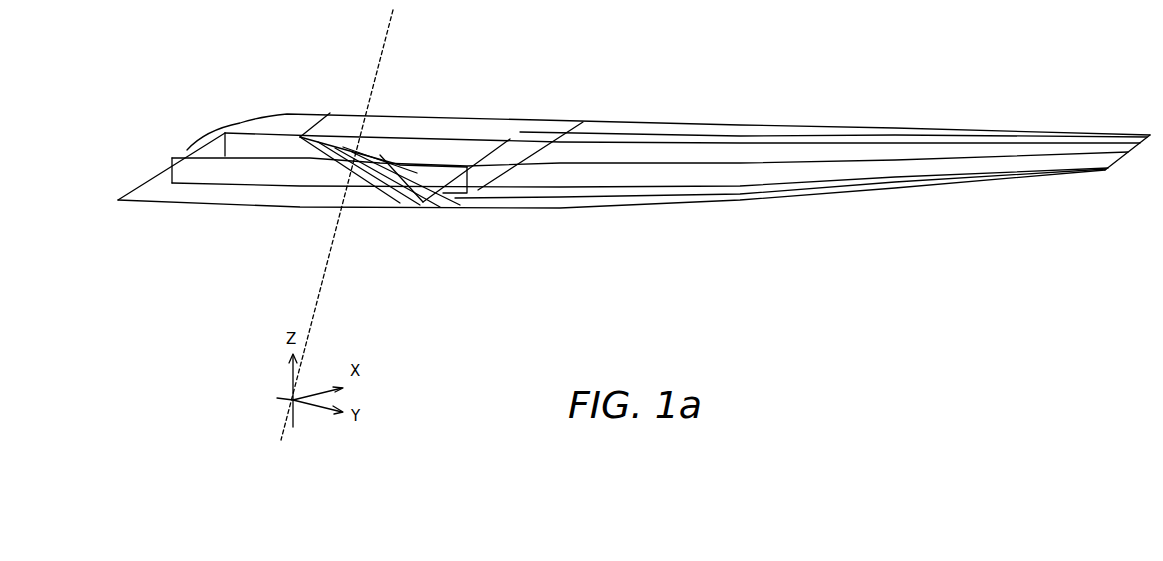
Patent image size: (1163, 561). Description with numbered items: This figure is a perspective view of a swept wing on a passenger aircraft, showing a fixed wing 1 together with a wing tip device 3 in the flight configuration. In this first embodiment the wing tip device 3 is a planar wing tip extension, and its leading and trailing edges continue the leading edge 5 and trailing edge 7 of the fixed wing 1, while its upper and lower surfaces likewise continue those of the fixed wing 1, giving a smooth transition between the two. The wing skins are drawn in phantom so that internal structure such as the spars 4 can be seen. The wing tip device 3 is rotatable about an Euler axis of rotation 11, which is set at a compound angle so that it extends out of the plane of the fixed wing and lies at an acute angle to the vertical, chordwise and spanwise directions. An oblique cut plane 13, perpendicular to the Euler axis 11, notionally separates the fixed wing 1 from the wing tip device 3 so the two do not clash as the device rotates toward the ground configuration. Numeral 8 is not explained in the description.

The fixed wing 1 is at (253, 118).
The wing tip device 3 is at (650, 203).
The spars 4 is at (178, 158).
The leading edge 5 is at (143, 207).
The trailing edge 7 is at (273, 118).
The chine 8 is at (470, 212).
The Euler axis of rotation 11 is at (388, 40).
The oblique cut plane 13 is at (316, 110).